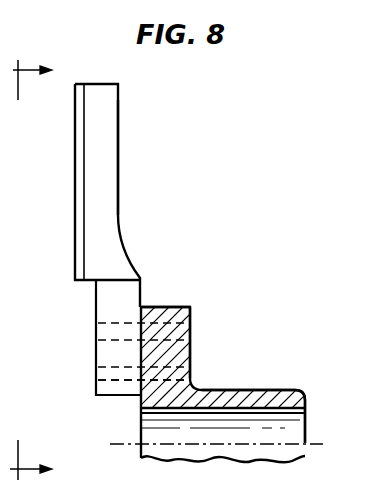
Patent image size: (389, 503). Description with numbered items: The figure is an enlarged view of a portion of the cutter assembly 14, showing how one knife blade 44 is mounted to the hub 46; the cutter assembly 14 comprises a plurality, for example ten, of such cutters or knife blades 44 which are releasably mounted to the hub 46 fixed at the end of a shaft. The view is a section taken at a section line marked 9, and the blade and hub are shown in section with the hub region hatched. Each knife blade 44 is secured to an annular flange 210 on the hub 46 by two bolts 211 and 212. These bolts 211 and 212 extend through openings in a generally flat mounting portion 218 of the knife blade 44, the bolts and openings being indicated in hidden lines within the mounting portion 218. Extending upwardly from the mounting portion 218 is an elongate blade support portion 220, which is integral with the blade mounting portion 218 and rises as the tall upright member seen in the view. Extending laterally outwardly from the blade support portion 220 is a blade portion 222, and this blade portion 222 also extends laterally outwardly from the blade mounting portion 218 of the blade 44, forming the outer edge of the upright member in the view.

The section line 9- 9 is at (31, 270).
The cutter assembly 14 is at (202, 293).
The knife blade 44 is at (110, 149).
The hub 46 is at (257, 397).
The annular flange 210 is at (185, 357).
The bolt 211 is at (124, 377).
The bolt 212 is at (128, 321).
The mounting portion 218 is at (112, 337).
The blade support portion 220 is at (108, 183).
The blade portion 222 is at (84, 172).